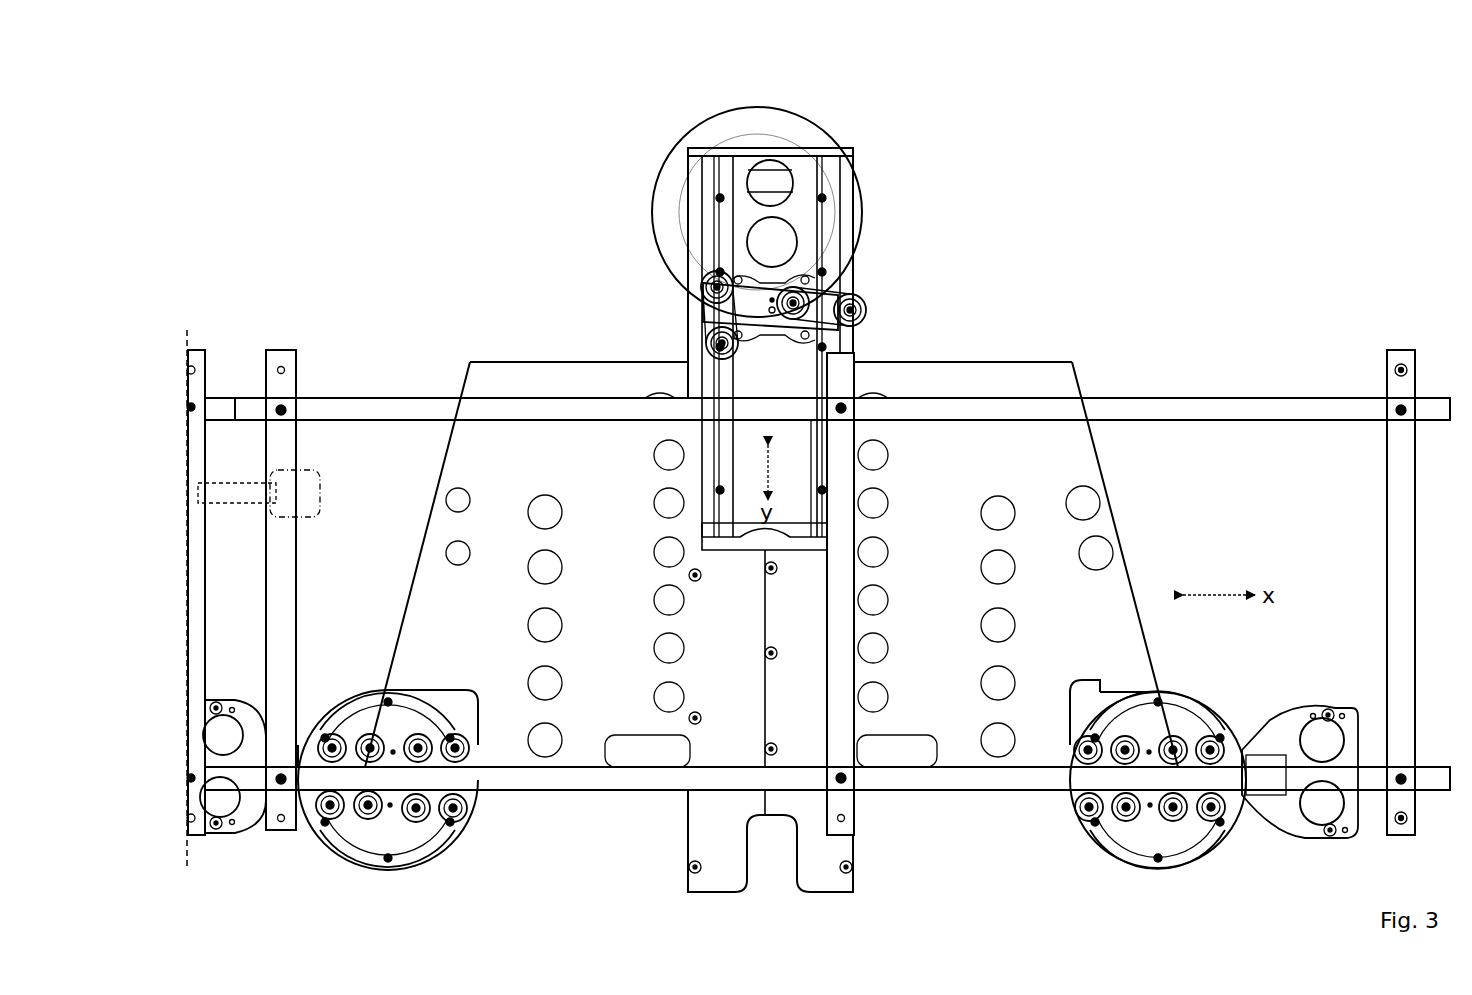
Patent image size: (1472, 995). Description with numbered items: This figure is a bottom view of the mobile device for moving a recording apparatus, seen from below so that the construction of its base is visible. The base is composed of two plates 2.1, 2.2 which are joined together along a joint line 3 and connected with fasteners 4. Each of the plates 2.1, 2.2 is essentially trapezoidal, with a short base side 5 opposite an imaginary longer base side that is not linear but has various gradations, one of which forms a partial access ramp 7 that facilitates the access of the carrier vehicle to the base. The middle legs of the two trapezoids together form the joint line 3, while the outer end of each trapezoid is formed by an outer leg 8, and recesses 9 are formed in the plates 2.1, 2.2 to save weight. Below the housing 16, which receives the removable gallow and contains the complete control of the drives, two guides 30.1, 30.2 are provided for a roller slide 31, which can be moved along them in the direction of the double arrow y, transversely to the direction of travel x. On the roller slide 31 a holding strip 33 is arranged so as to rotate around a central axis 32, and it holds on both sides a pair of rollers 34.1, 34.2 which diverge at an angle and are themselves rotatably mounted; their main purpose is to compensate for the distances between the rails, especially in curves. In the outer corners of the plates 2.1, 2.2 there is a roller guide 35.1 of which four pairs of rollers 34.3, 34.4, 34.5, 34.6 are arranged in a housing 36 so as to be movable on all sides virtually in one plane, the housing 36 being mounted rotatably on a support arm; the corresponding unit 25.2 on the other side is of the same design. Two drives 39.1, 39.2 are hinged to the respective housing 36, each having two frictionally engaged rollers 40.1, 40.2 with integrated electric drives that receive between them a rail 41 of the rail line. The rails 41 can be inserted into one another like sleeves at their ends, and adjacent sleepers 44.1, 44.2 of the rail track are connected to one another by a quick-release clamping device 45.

The plate 2.1 is at (517, 360).
The plate 2.2 is at (1045, 360).
The joint line 3 is at (771, 610).
The fasteners 4 is at (773, 658).
The short base side 5 is at (582, 362).
The partial access ramp 7 is at (700, 842).
The outer leg 8 is at (425, 545).
The recesses 9 is at (988, 508).
The housing 16 is at (686, 152).
The roller unit 25.2 is at (1160, 868).
The guide 30.1 is at (725, 227).
The guide 30.2 is at (822, 232).
The roller slide 31 is at (798, 341).
The central axis 32 is at (768, 302).
The holding strip 33 is at (772, 296).
The pair of rollers 34.1 is at (718, 320).
The pair of rollers 34.2 is at (862, 302).
The pair of rollers 34.3 is at (328, 812).
The pair of rollers 34.4 is at (368, 815).
The pair of rollers 34.5 is at (424, 815).
The pair of rollers 34.6 is at (468, 808).
The roller guide 35.1 is at (430, 868).
The housing 36 is at (350, 688).
The drive 39.1 is at (1283, 712).
The drive 39.2 is at (228, 688).
The frictionally engaged roller 40.1 is at (1322, 738).
The frictionally engaged roller 40.2 is at (1322, 805).
The rail 41 is at (1375, 776).
The sleeper 44.1 is at (195, 470).
The sleeper 44.2 is at (290, 447).
The quick-release clamping device 45 is at (233, 478).